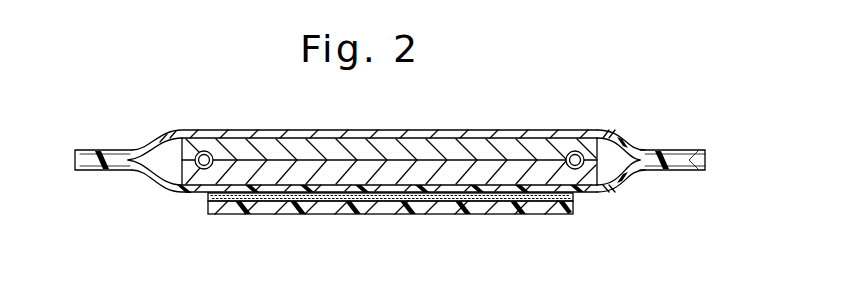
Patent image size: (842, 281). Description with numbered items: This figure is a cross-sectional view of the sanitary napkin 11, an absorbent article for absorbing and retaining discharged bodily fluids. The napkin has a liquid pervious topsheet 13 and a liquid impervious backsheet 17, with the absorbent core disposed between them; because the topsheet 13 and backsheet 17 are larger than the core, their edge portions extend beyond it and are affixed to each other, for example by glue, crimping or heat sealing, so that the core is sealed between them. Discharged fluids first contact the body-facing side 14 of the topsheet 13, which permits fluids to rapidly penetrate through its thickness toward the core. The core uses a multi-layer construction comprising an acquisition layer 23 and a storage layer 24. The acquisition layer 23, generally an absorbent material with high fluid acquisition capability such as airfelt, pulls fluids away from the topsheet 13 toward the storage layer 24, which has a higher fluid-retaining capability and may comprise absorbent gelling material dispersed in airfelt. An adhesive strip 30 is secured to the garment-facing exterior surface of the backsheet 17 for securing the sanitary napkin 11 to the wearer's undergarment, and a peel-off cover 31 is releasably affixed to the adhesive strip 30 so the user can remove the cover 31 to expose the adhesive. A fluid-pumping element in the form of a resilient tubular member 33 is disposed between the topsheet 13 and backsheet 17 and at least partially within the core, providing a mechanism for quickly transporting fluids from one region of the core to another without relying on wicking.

The sanitary napkin 11 is at (650, 132).
The liquid pervious topsheet 13 is at (140, 146).
The body-facing side 14 is at (226, 134).
The liquid impervious backsheet 17 is at (153, 186).
The acquisition layer 23 is at (368, 142).
The storage layer 24 is at (557, 170).
The adhesive strip 30 is at (207, 197).
The peel-off cover 31 is at (247, 215).
The resilient tubular member 33 is at (196, 153).